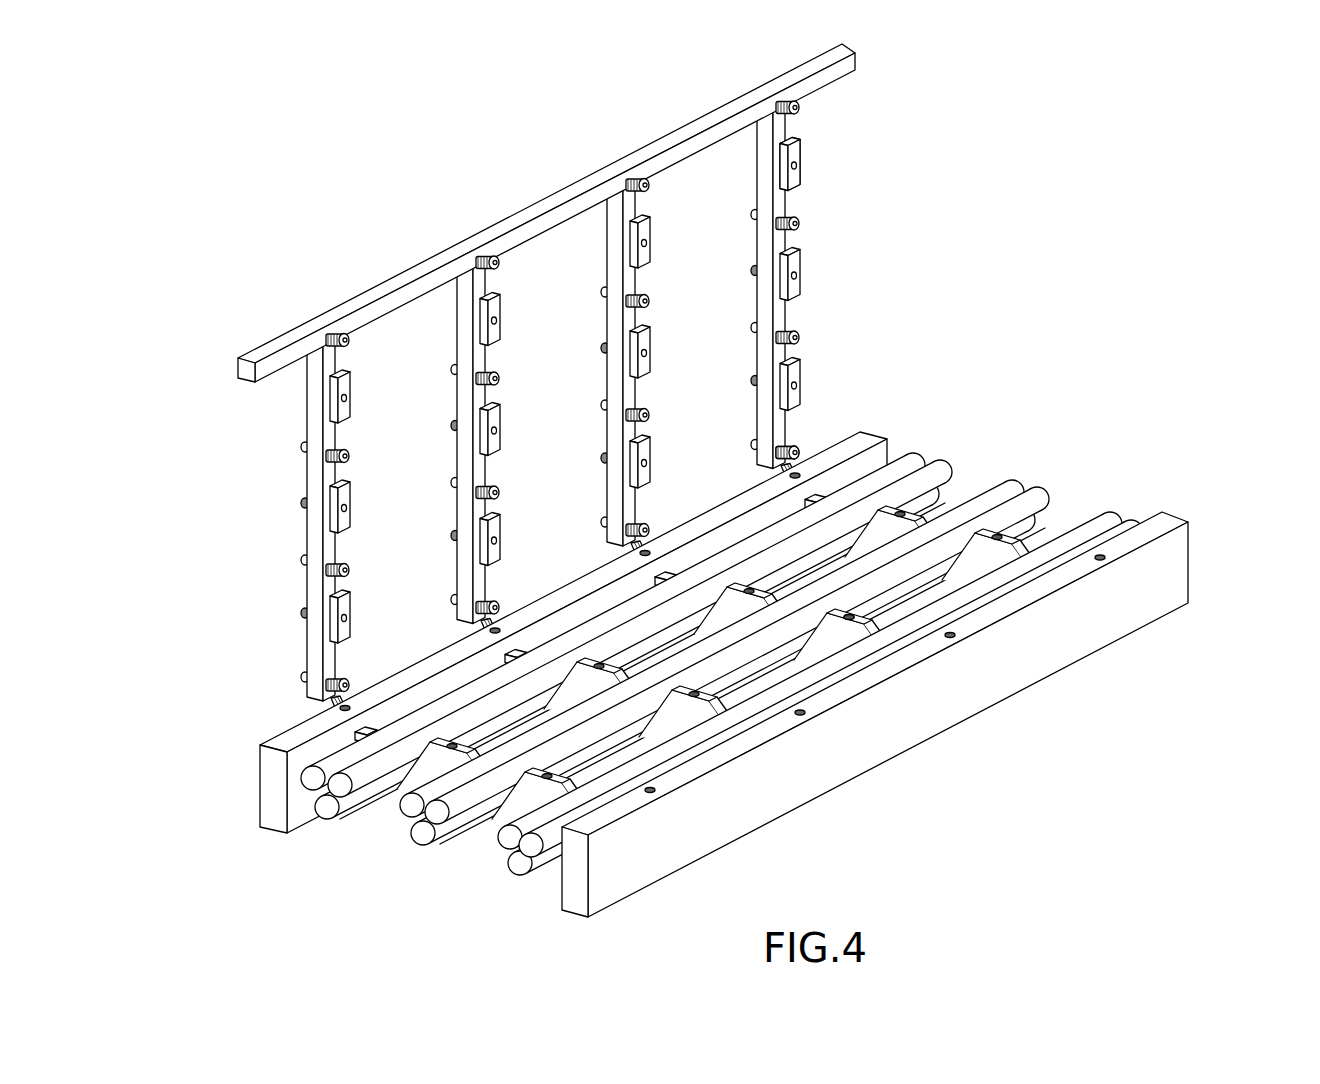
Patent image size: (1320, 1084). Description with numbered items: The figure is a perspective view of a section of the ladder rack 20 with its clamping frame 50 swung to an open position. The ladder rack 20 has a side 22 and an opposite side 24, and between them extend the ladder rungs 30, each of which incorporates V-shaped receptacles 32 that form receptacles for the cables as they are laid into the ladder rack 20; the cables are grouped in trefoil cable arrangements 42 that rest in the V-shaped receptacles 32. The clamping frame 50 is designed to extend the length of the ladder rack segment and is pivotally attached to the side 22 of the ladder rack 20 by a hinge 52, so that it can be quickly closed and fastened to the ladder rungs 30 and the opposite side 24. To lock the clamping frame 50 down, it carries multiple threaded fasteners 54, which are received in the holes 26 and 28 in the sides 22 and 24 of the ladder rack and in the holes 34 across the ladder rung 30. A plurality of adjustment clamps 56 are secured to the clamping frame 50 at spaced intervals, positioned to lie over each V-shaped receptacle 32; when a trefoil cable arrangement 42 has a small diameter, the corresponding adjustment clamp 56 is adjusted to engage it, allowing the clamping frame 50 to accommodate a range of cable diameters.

The ladder rack 20 is at (702, 479).
The side 22 is at (270, 790).
The opposite side 24 is at (1003, 607).
The holes 26 is at (343, 706).
The holes 28 is at (1105, 558).
The ladder rung 30 is at (836, 642).
The V-shaped receptacle 32 is at (803, 652).
The holes 34 is at (852, 620).
The trefoil cable arrangement 42 is at (906, 462).
The clamping frame 50 is at (846, 63).
The hinge 52 is at (770, 472).
The threaded fasteners 54 is at (800, 107).
The adjustment clamps 56 is at (797, 181).